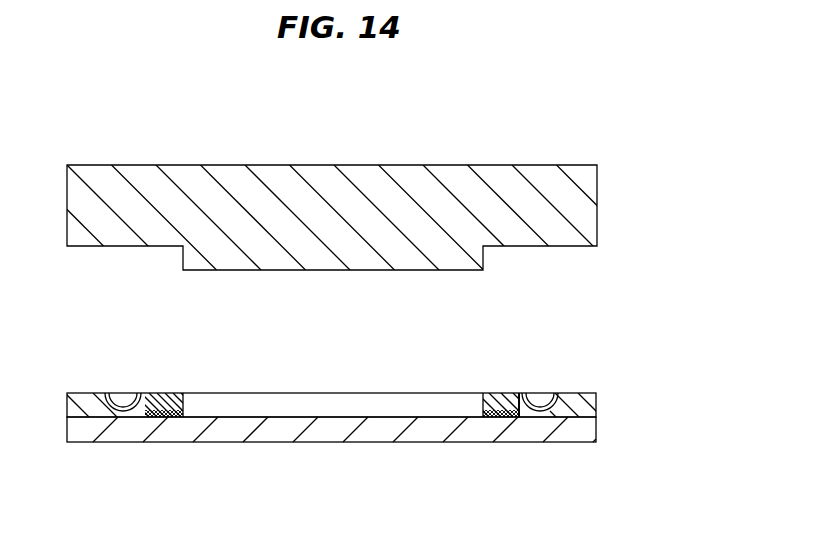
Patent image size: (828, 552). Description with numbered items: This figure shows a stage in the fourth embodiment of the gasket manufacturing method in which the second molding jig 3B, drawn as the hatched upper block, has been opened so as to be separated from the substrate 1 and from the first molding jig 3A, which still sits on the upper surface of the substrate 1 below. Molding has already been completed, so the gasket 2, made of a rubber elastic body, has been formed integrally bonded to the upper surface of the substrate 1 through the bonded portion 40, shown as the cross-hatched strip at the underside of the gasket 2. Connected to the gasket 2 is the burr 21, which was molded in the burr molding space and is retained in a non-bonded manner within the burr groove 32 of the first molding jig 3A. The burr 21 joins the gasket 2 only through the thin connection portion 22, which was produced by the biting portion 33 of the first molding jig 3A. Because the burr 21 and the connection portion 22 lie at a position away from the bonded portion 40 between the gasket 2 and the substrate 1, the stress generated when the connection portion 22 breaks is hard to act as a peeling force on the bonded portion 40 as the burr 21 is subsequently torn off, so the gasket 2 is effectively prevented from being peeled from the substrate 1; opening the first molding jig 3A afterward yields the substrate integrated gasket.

The substrate 1 is at (368, 446).
The gasket 2 is at (501, 380).
The burr 21 is at (540, 402).
The connection portion 22 is at (520, 400).
The first molding jig 3A is at (604, 397).
The second molding jig 3B is at (360, 166).
The burr groove 32 is at (121, 395).
The biting portion 33 is at (144, 397).
The bonded portion 40 is at (505, 418).